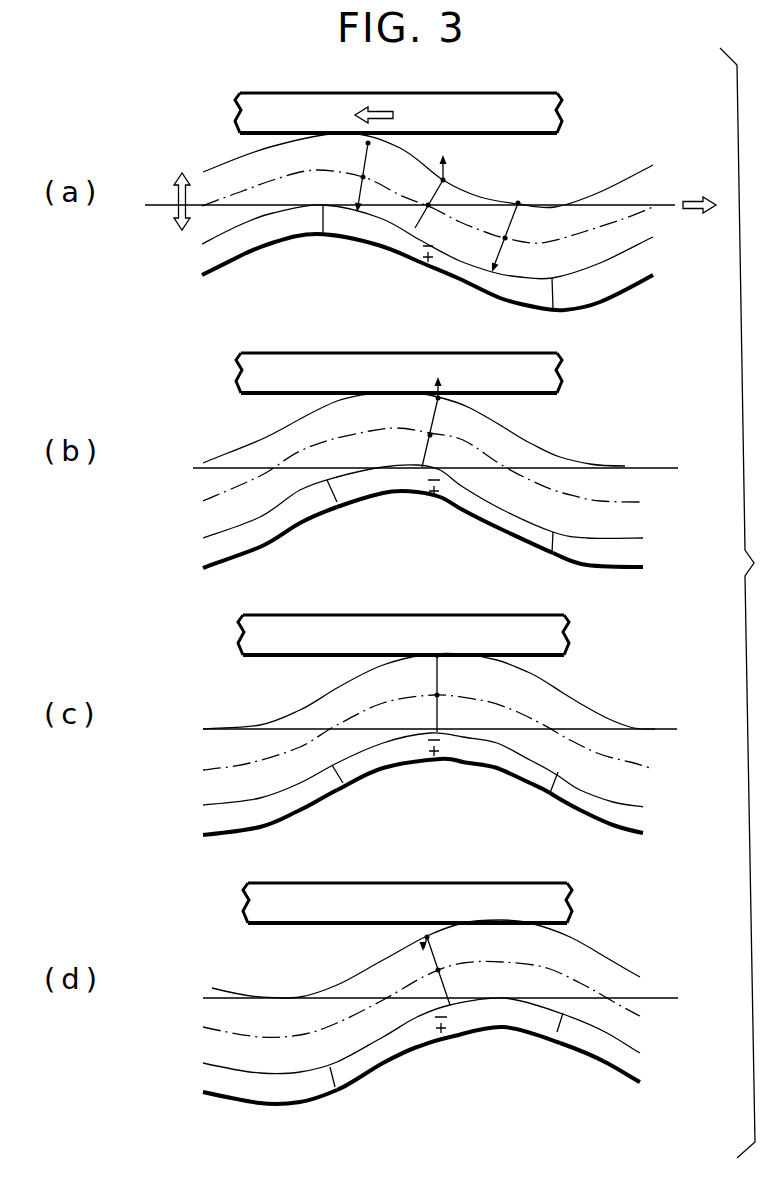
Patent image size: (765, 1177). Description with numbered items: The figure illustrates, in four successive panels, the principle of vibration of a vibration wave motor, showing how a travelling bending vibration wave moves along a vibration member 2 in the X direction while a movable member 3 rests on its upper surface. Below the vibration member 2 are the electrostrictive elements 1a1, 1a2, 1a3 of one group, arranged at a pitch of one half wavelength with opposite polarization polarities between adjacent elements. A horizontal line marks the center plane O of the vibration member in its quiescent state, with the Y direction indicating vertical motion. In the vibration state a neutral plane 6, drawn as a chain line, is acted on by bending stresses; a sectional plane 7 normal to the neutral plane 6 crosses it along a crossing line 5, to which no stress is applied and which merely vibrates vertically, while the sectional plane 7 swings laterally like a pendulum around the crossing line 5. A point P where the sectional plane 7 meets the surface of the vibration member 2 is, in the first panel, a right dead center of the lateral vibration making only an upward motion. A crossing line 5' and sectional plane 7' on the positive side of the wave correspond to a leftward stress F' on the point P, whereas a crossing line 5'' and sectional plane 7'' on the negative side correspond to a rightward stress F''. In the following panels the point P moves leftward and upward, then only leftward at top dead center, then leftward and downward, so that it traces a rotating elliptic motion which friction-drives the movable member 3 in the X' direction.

The vibration member 2 is at (346, 985).
The movable member 3 is at (503, 96).
The crossing line 5 is at (439, 584).
The crossing line 5' is at (334, 192).
The crossing line 5'' is at (536, 257).
The neutral plane 6 is at (650, 209).
The sectional plane 7 is at (453, 592).
The sectional plane 7' is at (381, 177).
The sectional plane 7'' is at (530, 237).
The electrostrictive element 1a1 is at (623, 276).
The electrostrictive element 1a2 is at (378, 243).
The electrostrictive element 1a3 is at (250, 239).
The point P is at (445, 162).
The center plane O is at (166, 207).
The X direction X is at (710, 204).
The X' direction X' is at (361, 116).
The Y direction Y is at (173, 182).
The stress F' is at (340, 153).
The stress F'' is at (542, 183).